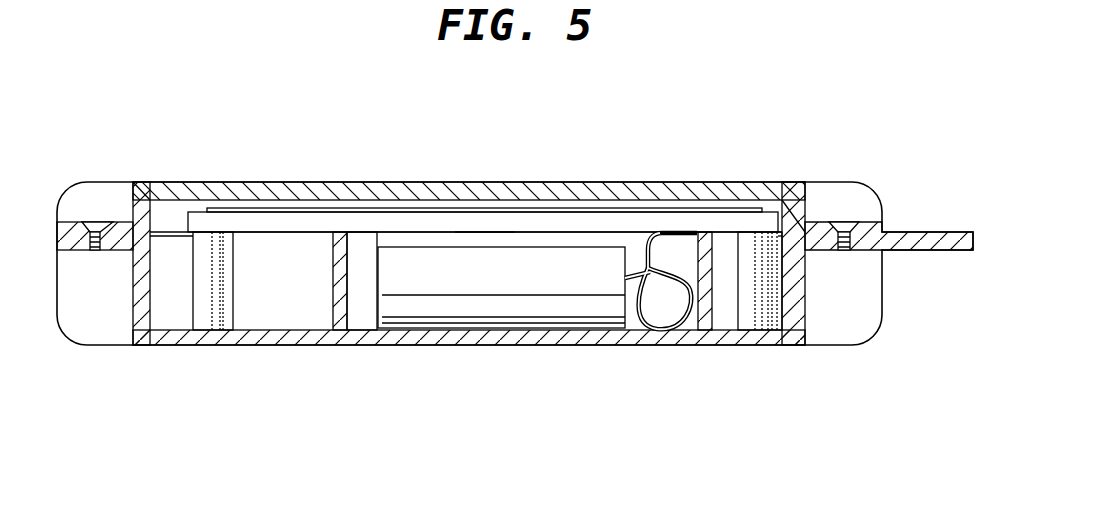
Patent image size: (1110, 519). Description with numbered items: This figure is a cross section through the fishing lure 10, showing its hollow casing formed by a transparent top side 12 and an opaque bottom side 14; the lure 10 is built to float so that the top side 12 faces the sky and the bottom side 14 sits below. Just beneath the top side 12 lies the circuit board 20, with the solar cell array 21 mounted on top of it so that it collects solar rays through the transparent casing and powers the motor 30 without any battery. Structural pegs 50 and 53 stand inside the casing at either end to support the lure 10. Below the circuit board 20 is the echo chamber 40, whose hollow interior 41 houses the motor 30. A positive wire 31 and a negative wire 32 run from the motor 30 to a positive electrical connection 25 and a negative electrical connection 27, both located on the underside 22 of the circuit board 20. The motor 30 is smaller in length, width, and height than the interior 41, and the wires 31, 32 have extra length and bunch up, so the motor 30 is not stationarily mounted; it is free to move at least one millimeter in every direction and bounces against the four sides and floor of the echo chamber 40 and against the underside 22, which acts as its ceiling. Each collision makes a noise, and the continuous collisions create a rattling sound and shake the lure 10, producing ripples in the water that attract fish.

The fishing lure 10 is at (796, 117).
The top side 12 is at (712, 182).
The bottom side 14 is at (452, 345).
The circuit board 20 is at (280, 222).
The solar cell array 21 is at (399, 211).
The underside 22 is at (362, 250).
The positive electrical connection 25 is at (742, 342).
The negative electrical connection 27 is at (685, 237).
The motor 30 is at (537, 285).
The positive wire 31 is at (698, 297).
The negative wire 32 is at (648, 326).
The echo chamber 40 is at (337, 292).
The interior 41 is at (484, 226).
The structural peg 50 is at (760, 270).
The structural peg 53 is at (210, 273).